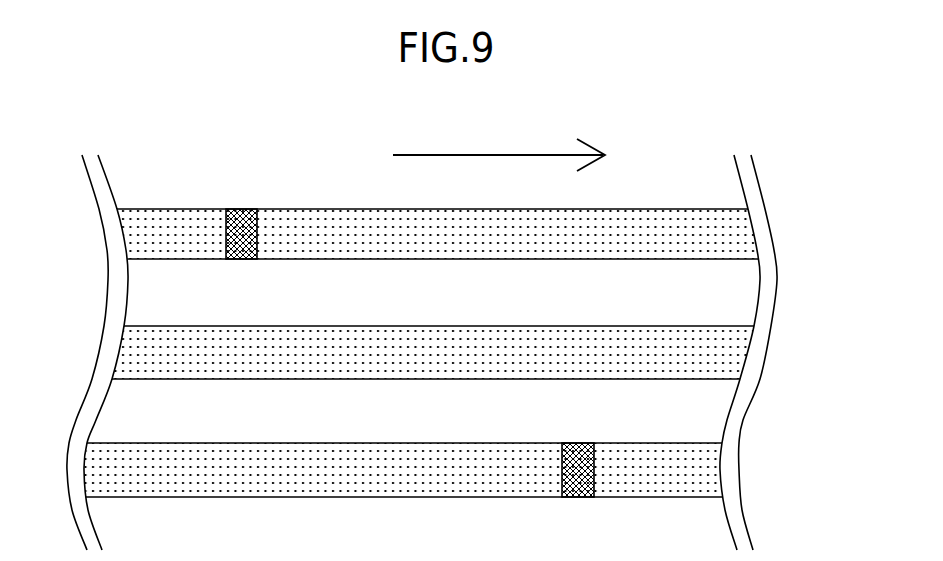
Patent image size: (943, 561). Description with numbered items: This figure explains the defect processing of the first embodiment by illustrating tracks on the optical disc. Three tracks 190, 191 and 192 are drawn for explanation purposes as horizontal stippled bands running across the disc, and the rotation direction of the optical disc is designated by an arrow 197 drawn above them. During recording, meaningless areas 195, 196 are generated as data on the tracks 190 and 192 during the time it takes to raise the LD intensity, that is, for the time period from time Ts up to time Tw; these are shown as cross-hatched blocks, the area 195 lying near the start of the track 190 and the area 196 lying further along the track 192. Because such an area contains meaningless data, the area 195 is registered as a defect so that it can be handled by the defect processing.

The track 190 is at (748, 233).
The track 191 is at (738, 352).
The track 192 is at (713, 473).
The meaningless area 195 is at (240, 209).
The meaningless area 196 is at (580, 497).
The arrow 197 is at (518, 154).